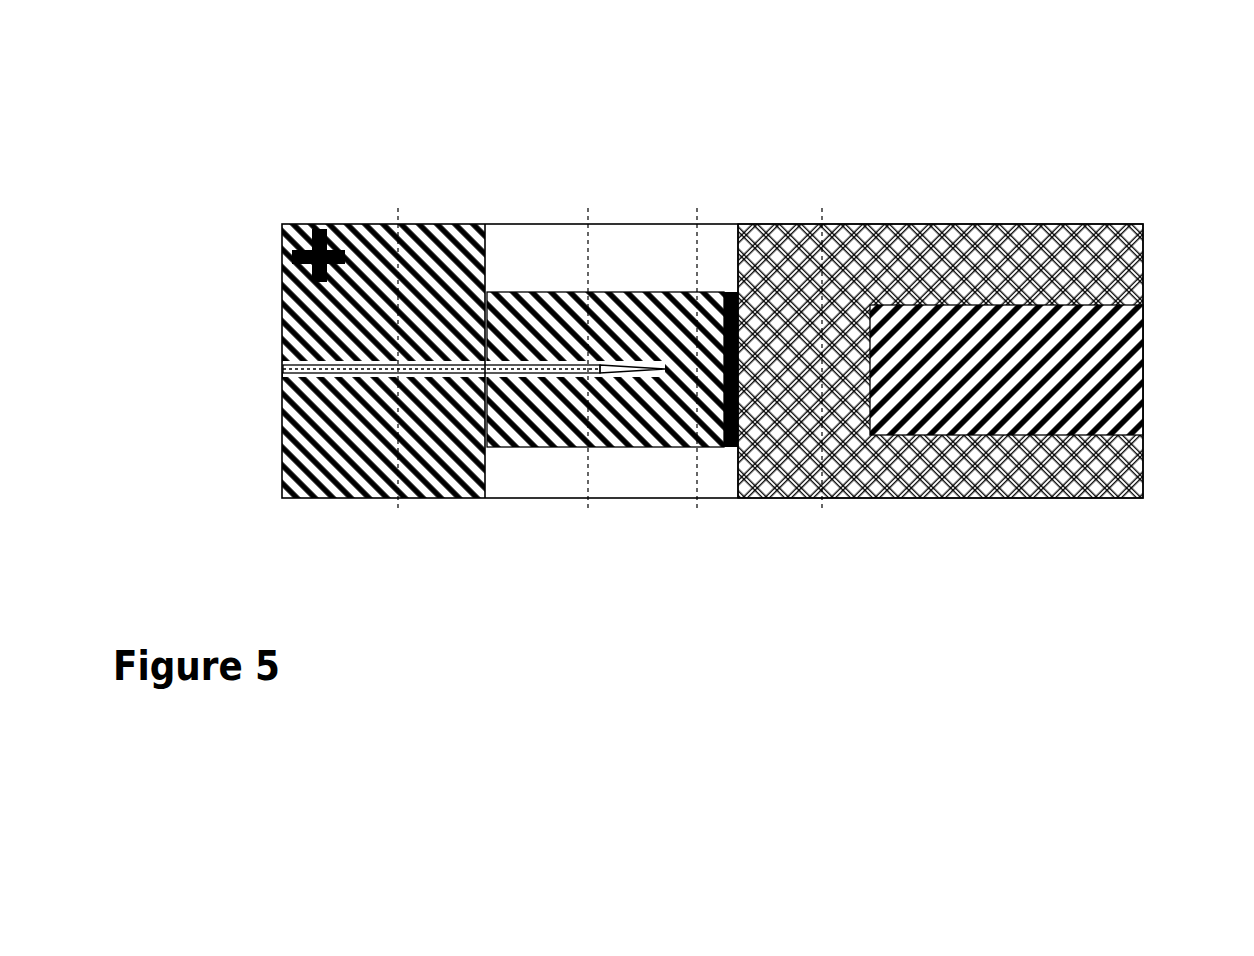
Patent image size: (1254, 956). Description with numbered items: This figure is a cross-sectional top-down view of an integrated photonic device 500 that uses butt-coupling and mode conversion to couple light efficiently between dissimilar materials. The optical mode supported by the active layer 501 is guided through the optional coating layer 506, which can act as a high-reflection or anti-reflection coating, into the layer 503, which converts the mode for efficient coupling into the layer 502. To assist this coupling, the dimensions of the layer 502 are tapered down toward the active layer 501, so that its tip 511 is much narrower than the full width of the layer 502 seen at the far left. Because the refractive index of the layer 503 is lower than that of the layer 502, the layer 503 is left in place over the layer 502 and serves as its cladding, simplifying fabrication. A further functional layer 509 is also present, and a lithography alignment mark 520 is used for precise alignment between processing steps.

The integrated photonic device 500 is at (245, 97).
The active layer 501 is at (913, 224).
The layer 502 is at (283, 369).
The layer 503 is at (497, 291).
The coating layer 506 is at (730, 292).
The functional layer 509 is at (1145, 307).
The tip 511 is at (662, 367).
The lithography alignment mark 520 is at (312, 237).